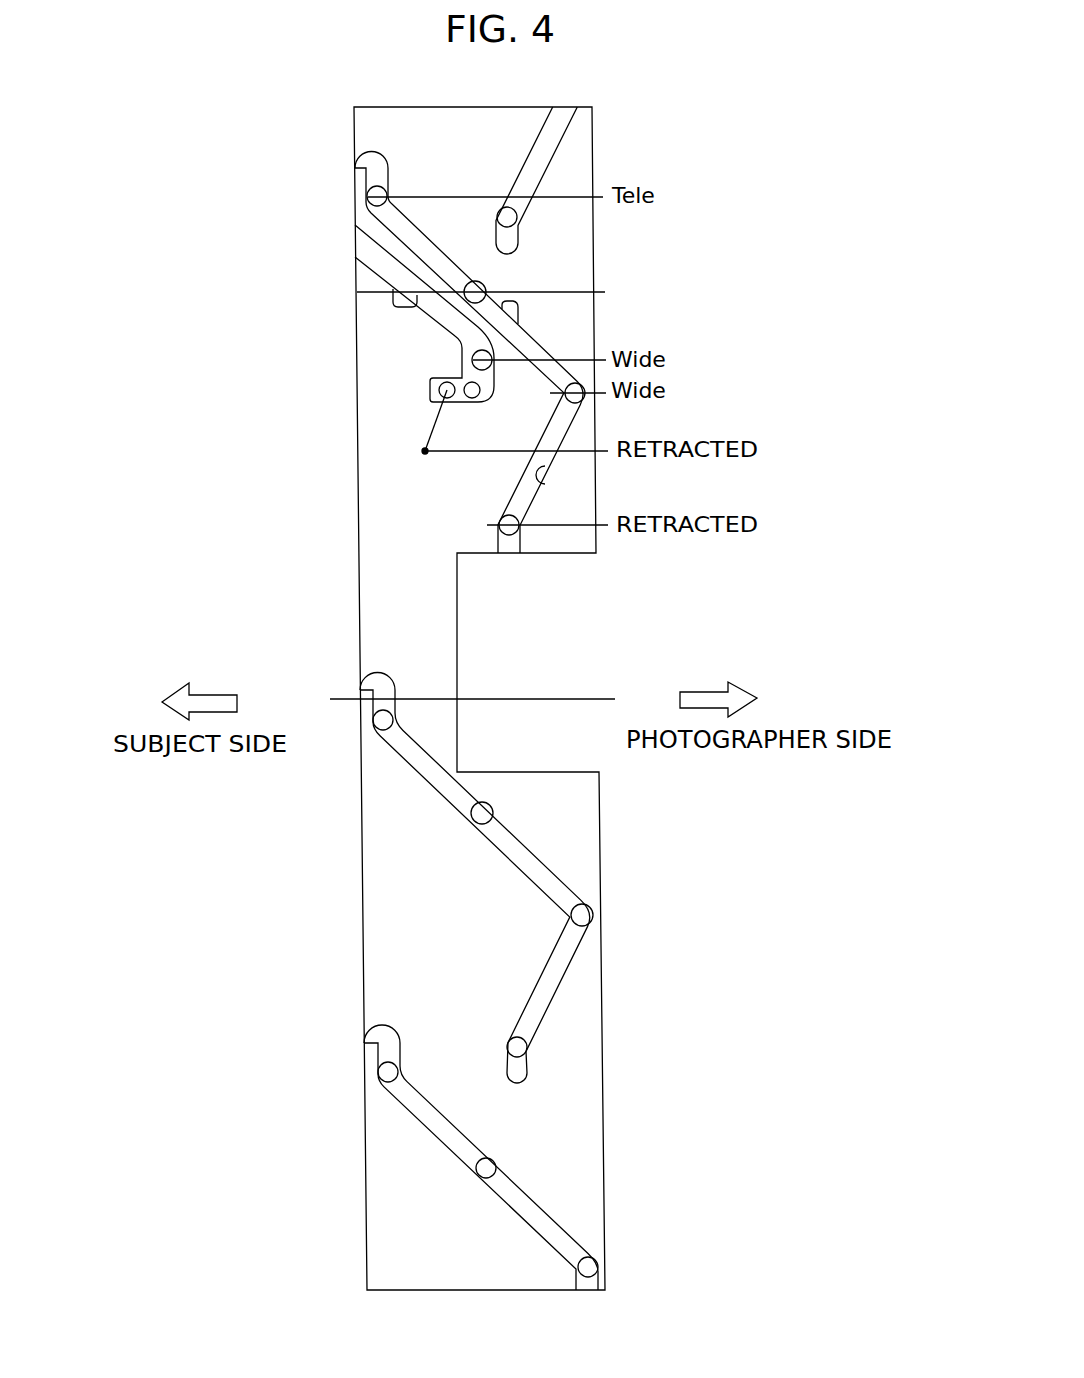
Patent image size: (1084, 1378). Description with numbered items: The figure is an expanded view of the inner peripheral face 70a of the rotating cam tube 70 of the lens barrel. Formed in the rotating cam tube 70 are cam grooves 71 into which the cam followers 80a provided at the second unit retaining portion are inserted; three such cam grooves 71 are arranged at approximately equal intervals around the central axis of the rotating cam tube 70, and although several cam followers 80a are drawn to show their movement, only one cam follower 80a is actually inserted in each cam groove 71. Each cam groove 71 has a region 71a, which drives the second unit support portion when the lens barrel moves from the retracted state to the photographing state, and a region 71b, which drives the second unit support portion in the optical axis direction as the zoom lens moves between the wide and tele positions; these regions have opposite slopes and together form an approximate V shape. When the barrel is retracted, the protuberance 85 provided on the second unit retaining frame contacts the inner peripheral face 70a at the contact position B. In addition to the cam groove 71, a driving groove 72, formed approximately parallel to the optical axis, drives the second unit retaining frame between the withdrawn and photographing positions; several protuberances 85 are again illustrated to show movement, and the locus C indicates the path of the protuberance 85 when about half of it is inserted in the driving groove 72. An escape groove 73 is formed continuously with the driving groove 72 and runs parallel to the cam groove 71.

The rotating cam tube 70 is at (441, 107).
The inner peripheral face 70a is at (440, 517).
The cam groove 71 is at (557, 327).
The region of cam groove 71a is at (540, 482).
The region of cam groove 71b is at (517, 314).
The driving groove 72 is at (462, 370).
The escape groove 73 is at (393, 292).
The cam follower 80a is at (513, 540).
The protuberance 85 is at (433, 390).
The contact position B is at (425, 451).
The locus of movement C is at (437, 418).